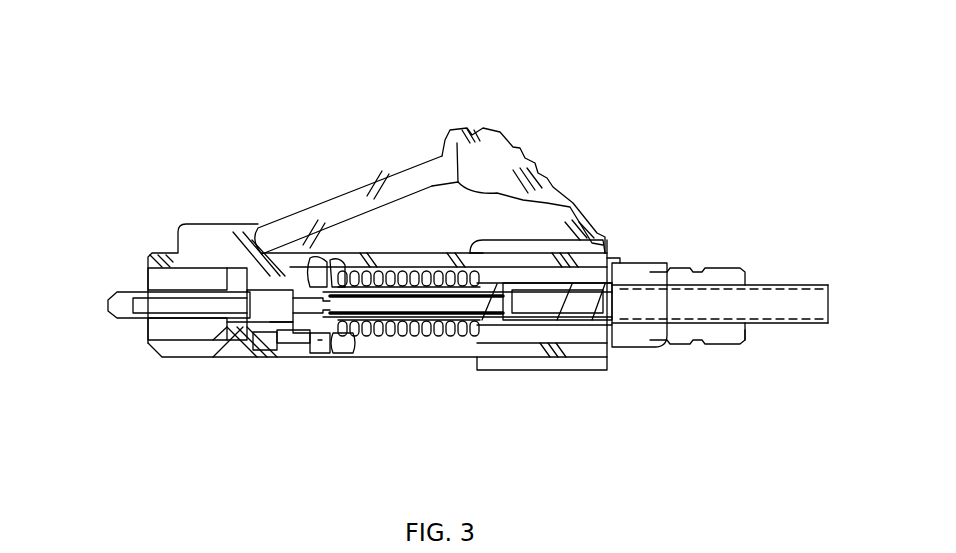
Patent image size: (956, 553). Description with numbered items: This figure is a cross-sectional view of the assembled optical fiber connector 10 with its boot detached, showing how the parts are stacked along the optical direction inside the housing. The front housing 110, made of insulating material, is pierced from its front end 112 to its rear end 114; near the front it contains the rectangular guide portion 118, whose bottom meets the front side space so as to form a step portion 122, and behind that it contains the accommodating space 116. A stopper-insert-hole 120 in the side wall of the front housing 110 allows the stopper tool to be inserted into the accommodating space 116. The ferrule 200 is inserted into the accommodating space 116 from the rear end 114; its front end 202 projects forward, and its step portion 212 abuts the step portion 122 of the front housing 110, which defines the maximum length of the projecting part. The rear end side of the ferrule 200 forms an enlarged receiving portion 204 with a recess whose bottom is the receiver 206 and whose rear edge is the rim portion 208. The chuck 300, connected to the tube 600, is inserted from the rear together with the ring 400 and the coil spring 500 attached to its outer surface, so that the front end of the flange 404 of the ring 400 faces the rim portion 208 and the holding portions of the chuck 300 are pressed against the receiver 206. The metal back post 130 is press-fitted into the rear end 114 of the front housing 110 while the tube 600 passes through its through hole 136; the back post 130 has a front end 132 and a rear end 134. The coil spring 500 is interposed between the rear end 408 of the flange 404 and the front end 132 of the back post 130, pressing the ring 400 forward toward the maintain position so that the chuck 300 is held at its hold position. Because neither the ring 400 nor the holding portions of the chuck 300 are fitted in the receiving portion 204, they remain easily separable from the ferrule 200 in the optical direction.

The optical fiber connector 10 is at (347, 68).
The front housing 110 is at (197, 240).
The front end 112 is at (148, 260).
The step portion 122 is at (238, 258).
The front end 202 is at (110, 320).
The ferrule 200 is at (165, 350).
The step portion 212 is at (241, 358).
The guide portion 118 is at (246, 360).
The receiver 206 is at (280, 343).
The receiving portion 204 is at (293, 345).
The ring 400 is at (318, 345).
The flange 404 is at (345, 357).
The rim portion 208 is at (322, 272).
The chuck 300 is at (343, 270).
The stopper-insert-hole 120 is at (360, 262).
The rear end 408 is at (380, 258).
The coil spring 500 is at (440, 358).
The accommodating space 116 is at (460, 358).
The front end 132 is at (485, 365).
The rear end 114 is at (607, 368).
The back post 130 is at (688, 272).
The through hole 136 is at (688, 320).
The tube 600 is at (782, 285).
The rear end 134 is at (745, 338).